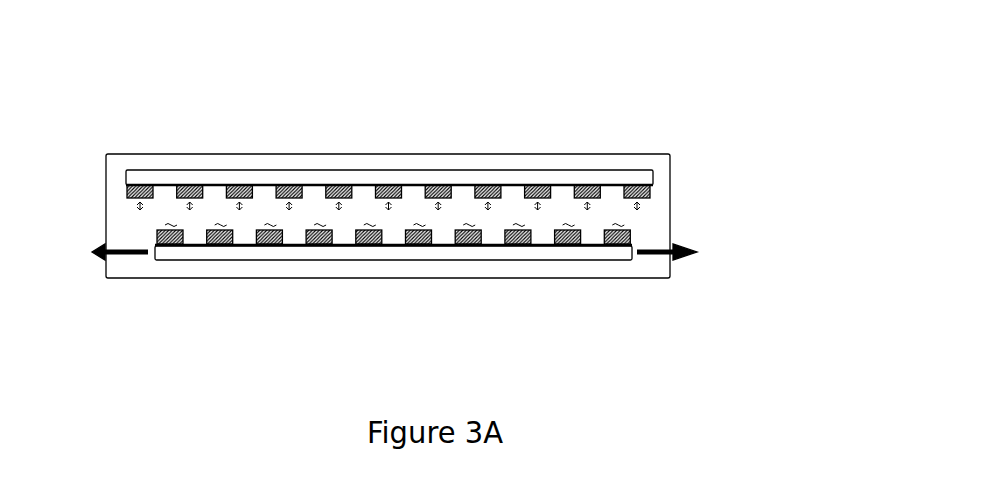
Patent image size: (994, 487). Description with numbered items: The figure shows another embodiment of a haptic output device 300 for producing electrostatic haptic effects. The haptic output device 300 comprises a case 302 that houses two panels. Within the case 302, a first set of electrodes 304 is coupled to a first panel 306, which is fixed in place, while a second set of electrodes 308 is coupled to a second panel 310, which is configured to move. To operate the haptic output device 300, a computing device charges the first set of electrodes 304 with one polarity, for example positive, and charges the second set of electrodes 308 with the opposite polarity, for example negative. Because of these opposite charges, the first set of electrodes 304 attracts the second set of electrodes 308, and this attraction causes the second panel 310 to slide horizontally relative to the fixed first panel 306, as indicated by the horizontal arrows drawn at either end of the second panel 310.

The haptic output device 300 is at (713, 183).
The case 302 is at (92, 177).
The first set of electrodes 304 is at (730, 57).
The first panel 306 is at (258, 173).
The second set of electrodes 308 is at (520, 245).
The second panel 310 is at (217, 260).